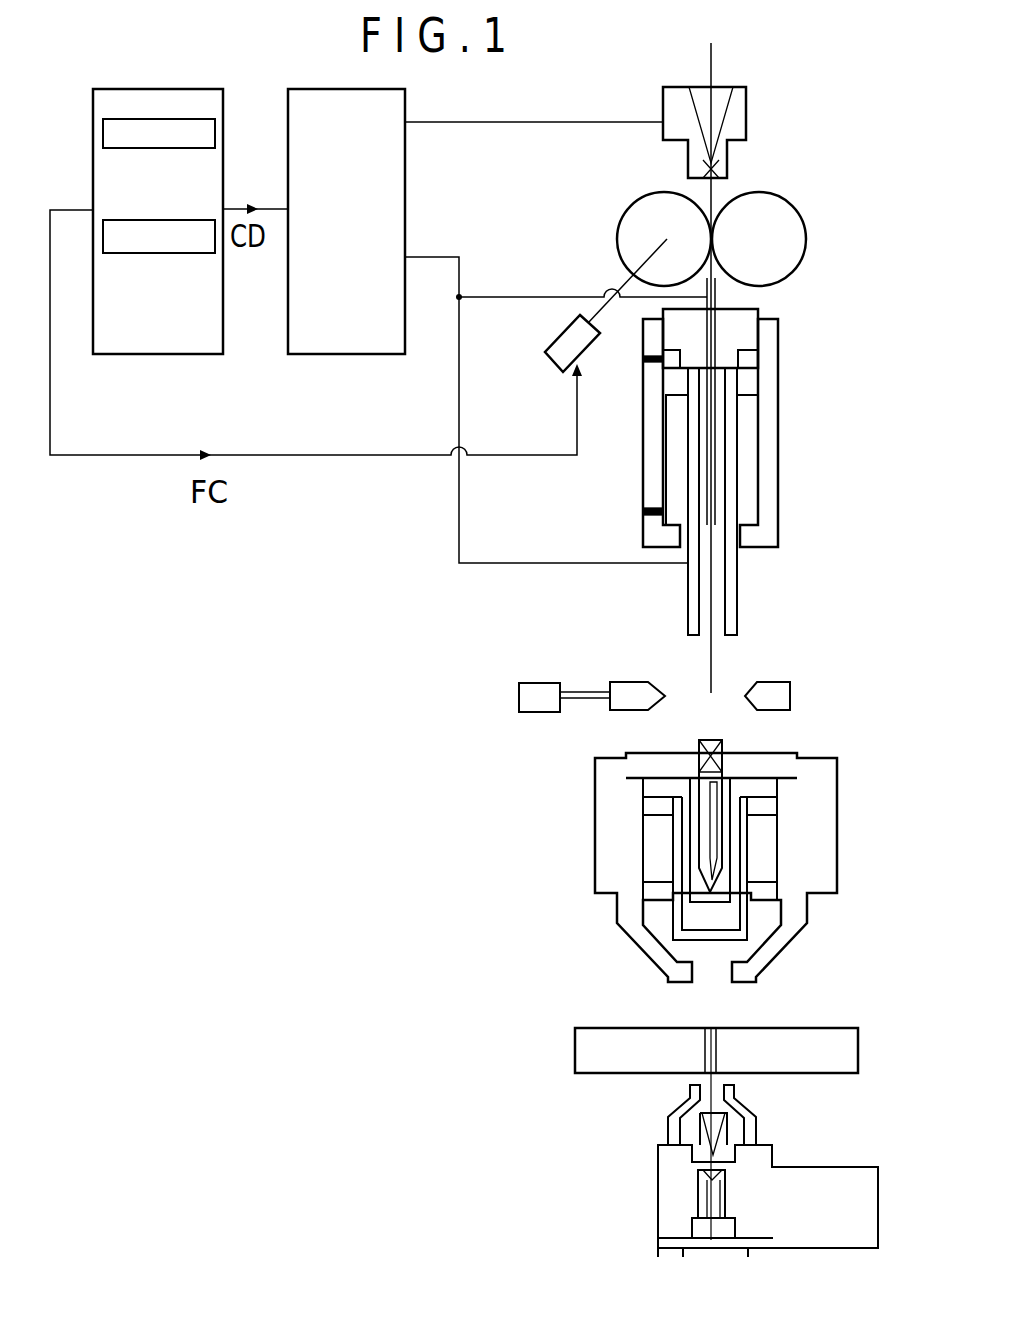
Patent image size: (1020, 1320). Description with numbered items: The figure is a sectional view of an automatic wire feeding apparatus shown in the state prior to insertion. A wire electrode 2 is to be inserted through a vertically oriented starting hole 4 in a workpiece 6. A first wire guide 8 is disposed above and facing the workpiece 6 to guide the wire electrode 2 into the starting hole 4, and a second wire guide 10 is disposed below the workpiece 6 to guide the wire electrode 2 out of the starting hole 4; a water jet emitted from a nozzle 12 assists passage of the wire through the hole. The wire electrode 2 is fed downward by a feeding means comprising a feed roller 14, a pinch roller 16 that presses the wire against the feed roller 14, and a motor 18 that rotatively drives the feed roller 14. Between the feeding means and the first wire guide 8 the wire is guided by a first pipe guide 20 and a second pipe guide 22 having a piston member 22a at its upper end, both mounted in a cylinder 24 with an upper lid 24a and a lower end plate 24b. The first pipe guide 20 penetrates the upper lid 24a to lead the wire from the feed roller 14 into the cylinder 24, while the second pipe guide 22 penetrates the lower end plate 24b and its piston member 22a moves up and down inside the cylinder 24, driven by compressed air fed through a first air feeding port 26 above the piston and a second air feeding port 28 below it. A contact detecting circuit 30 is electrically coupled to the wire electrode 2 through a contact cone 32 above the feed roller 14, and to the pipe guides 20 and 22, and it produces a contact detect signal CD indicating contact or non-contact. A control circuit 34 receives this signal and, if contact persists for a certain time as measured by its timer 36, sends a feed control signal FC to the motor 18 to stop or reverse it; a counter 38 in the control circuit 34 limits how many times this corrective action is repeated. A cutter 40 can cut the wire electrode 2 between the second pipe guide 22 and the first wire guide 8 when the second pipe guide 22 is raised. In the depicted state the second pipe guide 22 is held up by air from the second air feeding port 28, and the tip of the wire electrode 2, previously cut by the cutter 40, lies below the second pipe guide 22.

The wire electrode 2 is at (713, 68).
The starting hole 4 is at (706, 1028).
The workpiece 6 is at (858, 1055).
The first wire guide 8 is at (773, 753).
The second wire guide 10 is at (727, 1125).
The nozzle 12 is at (748, 870).
The feed roller 14 is at (620, 232).
The pinch roller 16 is at (804, 220).
The motor 18 is at (553, 343).
The first pipe guide 20 is at (718, 298).
The second pipe guide 22 is at (740, 595).
The piston member 22a is at (745, 388).
The cylinder 24 is at (778, 455).
The upper lid 24a is at (752, 328).
The lower end plate 24b is at (752, 545).
The first air feeding port 26 is at (643, 360).
The second air feeding port 28 is at (643, 512).
The contact detecting circuit 30 is at (383, 355).
The contact cone 32 is at (748, 122).
The control circuit 34 is at (195, 355).
The timer 36 is at (200, 253).
The counter 38 is at (198, 148).
The cutter 40 is at (527, 712).